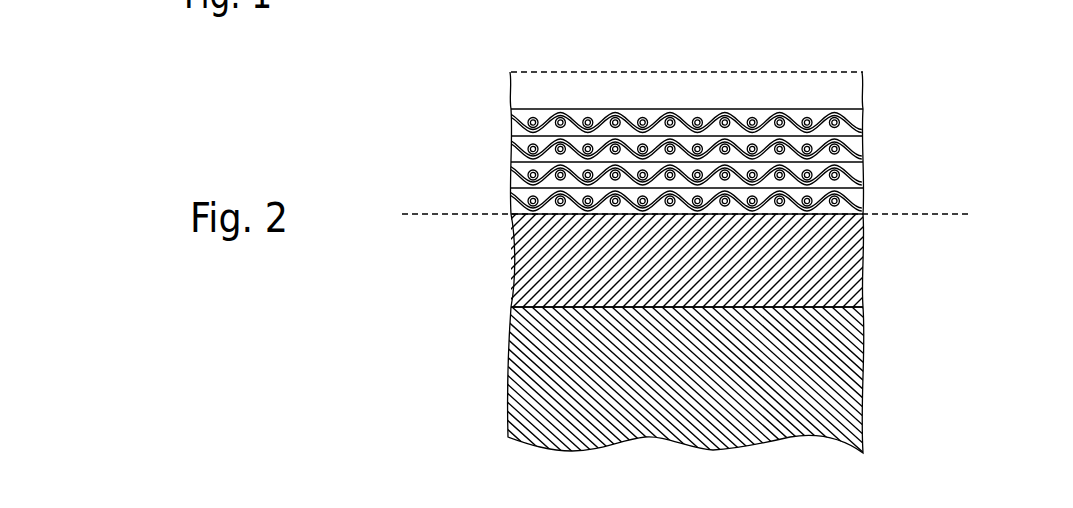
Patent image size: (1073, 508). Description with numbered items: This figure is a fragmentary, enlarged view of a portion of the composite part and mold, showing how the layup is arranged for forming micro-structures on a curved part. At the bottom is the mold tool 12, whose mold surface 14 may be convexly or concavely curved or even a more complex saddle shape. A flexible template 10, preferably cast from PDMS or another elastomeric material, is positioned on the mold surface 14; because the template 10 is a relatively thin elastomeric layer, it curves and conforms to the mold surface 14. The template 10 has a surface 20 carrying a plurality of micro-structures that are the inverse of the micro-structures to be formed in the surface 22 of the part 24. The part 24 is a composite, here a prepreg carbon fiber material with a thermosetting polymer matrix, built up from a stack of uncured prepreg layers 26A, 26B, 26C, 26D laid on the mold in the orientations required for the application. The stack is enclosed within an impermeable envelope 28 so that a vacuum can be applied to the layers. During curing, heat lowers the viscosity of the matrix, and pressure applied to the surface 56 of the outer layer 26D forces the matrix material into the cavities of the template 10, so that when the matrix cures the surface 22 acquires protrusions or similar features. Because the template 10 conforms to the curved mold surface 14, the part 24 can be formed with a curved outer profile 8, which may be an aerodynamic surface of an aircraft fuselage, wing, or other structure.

The outer profile 8 is at (572, 307).
The flexible template 10 is at (840, 260).
The mold tool 12 is at (845, 373).
The mold surface 14 is at (823, 307).
The surface of template 20 is at (860, 192).
The surface of part 22 is at (512, 255).
The part 24 is at (509, 160).
The layer of prepreg material 26A is at (862, 202).
The layer of prepreg material 26B is at (860, 167).
The layer of prepreg material 26C is at (858, 143).
The outer layer 26D is at (863, 112).
The impermeable envelope 28 is at (618, 72).
The surface of outer layer 56 is at (739, 108).